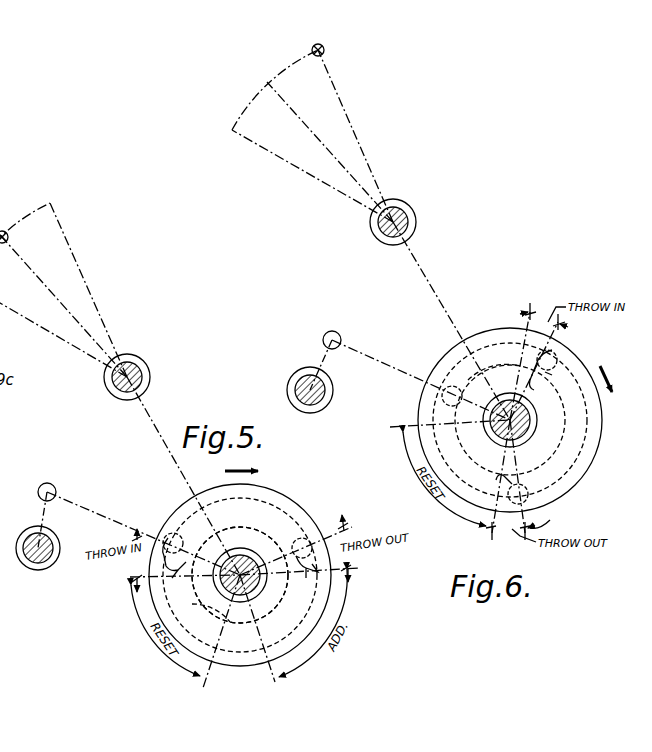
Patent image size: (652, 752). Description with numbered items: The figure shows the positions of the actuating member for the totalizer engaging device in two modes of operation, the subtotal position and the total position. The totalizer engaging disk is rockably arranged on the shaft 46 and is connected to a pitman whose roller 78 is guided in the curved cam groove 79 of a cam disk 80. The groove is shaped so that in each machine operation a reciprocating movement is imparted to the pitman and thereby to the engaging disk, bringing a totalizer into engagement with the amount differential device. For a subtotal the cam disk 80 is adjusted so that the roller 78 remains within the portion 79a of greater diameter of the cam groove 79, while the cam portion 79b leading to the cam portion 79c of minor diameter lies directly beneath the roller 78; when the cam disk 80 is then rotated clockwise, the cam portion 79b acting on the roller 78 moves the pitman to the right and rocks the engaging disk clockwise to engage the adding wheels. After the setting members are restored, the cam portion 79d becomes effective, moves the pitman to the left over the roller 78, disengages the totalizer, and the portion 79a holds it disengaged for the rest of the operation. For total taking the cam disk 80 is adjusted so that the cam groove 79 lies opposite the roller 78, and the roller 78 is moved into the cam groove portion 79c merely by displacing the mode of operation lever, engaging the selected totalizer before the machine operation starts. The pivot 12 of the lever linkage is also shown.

In FIG. 5, the pivot shaft of control lever 12 is at (145, 366).
In FIG. 6, the pivot shaft of control lever 12 is at (412, 226).
In FIG. 5, the shaft 46 is at (54, 556).
In FIG. 6, the shaft 46 is at (328, 396).
In FIG. 5, the roller 78 is at (168, 538).
In FIG. 6, the roller 78 is at (446, 398).
In FIG. 5, the cam groove 79 is at (318, 574).
In FIG. 6, the cam groove 79 is at (510, 420).
In FIG. 5, the cam groove portion of greater diameter 79a is at (260, 516).
In FIG. 6, the cam groove portion of greater diameter 79a is at (588, 448).
In FIG. 5, the cam portion 79b is at (172, 576).
In FIG. 6, the cam portion 79b is at (536, 382).
In FIG. 5, the cam portion of minor diameter 79c is at (216, 628).
In FIG. 6, the cam portion of minor diameter 79c is at (482, 358).
In FIG. 6, the cam portion 79d is at (504, 480).
In FIG. 5, the cam disk 80 is at (293, 514).
In FIG. 6, the cam disk 80 is at (466, 350).